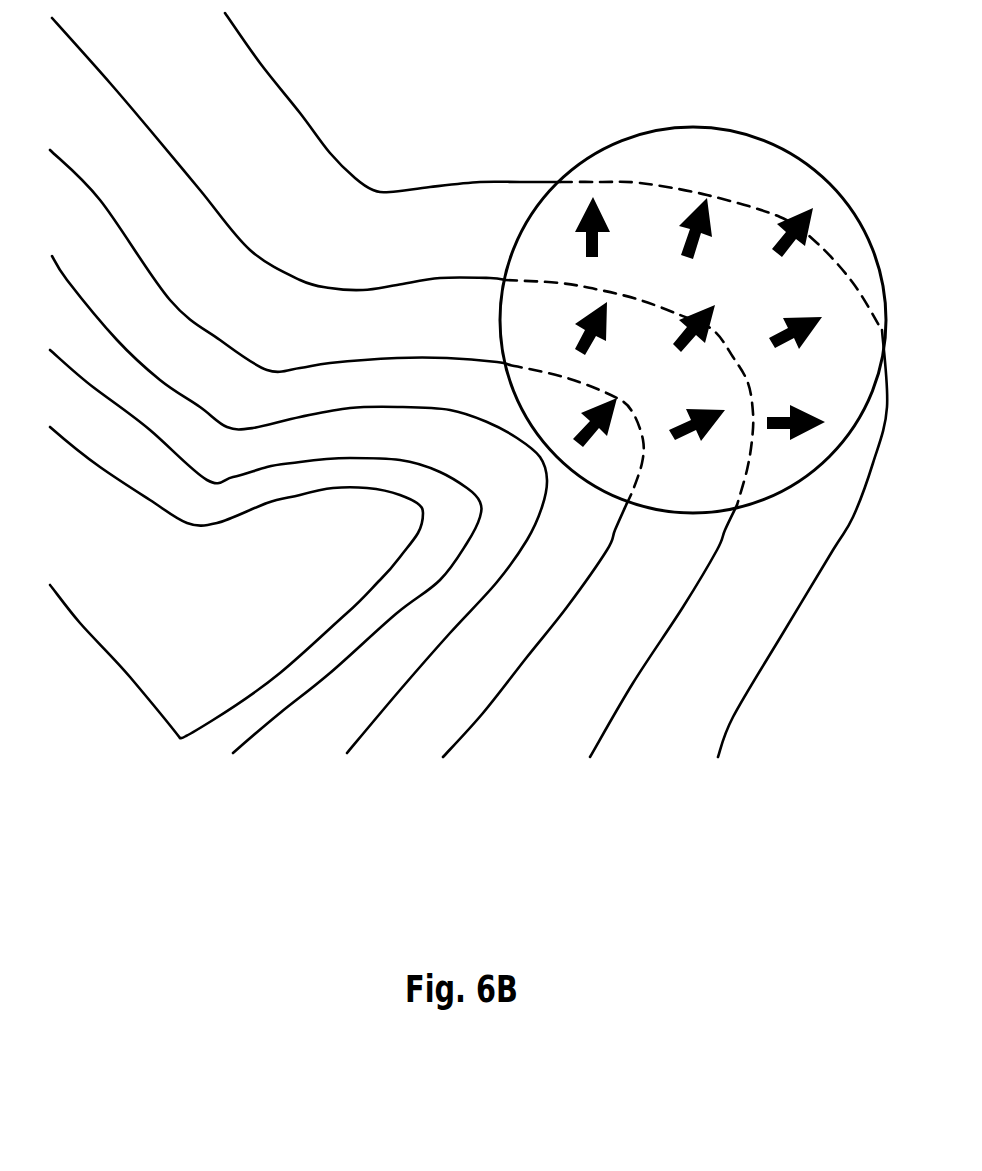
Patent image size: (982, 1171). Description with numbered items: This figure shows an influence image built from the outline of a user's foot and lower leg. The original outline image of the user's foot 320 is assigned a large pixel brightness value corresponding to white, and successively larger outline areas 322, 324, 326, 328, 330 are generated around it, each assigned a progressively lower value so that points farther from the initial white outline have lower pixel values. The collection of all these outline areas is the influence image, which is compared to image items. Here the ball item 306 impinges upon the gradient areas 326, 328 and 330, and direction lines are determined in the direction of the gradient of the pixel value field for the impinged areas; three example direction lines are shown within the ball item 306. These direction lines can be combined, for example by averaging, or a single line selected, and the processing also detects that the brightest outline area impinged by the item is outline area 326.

The ball item 306 is at (660, 128).
The outline image of the user's foot 320 is at (83, 627).
The outline area 322 is at (266, 551).
The outline area 324 is at (299, 504).
The outline area 326 is at (347, 453).
The outline area 328 is at (402, 387).
The outline area 330 is at (546, 385).